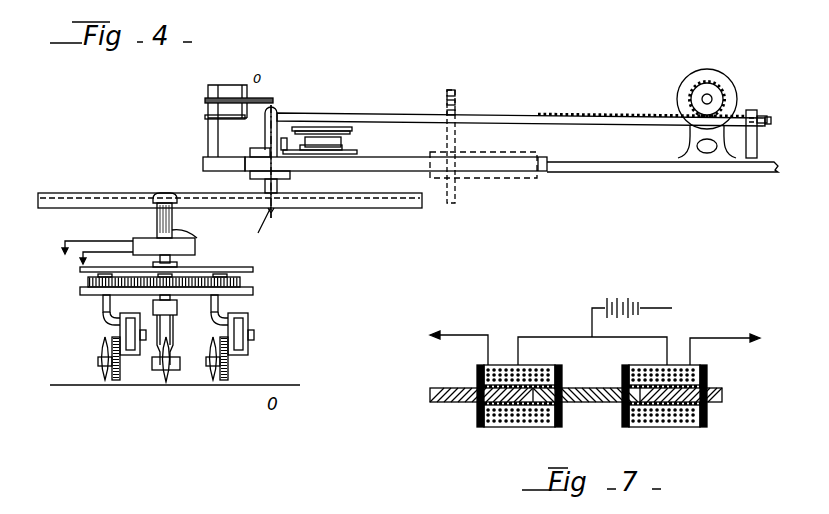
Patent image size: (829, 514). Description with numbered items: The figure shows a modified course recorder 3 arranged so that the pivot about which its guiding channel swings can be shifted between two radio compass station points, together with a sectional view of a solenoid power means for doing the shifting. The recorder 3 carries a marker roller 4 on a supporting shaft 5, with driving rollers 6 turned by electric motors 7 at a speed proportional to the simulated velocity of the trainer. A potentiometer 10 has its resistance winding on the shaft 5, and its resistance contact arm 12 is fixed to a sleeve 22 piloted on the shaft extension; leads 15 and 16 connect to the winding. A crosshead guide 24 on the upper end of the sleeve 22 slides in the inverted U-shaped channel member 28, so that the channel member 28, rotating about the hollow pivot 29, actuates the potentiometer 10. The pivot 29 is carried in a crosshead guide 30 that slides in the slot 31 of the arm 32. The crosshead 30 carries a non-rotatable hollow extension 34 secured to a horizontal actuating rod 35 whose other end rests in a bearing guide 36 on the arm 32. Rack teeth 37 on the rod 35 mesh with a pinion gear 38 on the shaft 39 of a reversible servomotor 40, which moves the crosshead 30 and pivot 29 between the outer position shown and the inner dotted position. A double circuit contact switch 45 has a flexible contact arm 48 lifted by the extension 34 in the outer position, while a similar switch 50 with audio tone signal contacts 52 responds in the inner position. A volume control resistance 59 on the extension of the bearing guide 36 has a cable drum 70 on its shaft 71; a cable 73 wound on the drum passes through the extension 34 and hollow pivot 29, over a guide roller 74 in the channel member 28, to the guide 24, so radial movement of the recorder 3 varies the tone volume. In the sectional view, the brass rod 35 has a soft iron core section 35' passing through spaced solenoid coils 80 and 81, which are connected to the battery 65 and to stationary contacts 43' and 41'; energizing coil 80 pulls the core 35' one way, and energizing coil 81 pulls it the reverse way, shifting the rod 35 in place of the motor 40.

In FIG. 4, the course recorder 3 is at (256, 289).
In FIG. 4, the marker roller 4 is at (166, 383).
In FIG. 4, the supporting shaft 5 is at (185, 333).
In FIG. 4, the driving rollers 6 is at (107, 388).
In FIG. 4, the electric motors 7 is at (253, 338).
In FIG. 4, the potentiometer 10 is at (195, 249).
In FIG. 4, the resistance contact arm 12 is at (184, 232).
In FIG. 4, the lead 15 is at (90, 222).
In FIG. 4, the lead 16 is at (104, 257).
In FIG. 4, the sleeve 22 is at (158, 221).
In FIG. 4, the crosshead guide 24 is at (177, 205).
In FIG. 4, the channel member 28 is at (323, 209).
In FIG. 4, the pivot 29 is at (282, 185).
In FIG. 4, the crosshead guide 30 is at (260, 149).
In FIG. 4, the slot 31 is at (543, 154).
In FIG. 4, the arm 32 is at (573, 168).
In FIG. 4, the hollow extension 34 is at (280, 106).
In FIG. 4, the actuating rod 35 is at (524, 108).
In FIG. 7, the actuating rod 35 is at (586, 409).
In FIG. 4, the bearing guide 36 is at (757, 141).
In FIG. 4, the rack teeth 37 is at (573, 113).
In FIG. 4, the pinion gear 38 is at (717, 83).
In FIG. 4, the shaft 39 is at (714, 100).
In FIG. 4, the reversible electric servomotor 40 is at (699, 72).
In FIG. 4, the double circuit contact switch 45 is at (230, 93).
In FIG. 4, the flexible contact arm 48 is at (262, 97).
In FIG. 4, the double circuit contact switch 50 is at (458, 94).
In FIG. 4, the audio tone signal contacts 52 is at (177, 310).
In FIG. 4, the volume control resistance 59 is at (350, 144).
In FIG. 4, the cable drum 70 is at (353, 130).
In FIG. 4, the shaft 71 is at (292, 142).
In FIG. 4, the cable 73 is at (227, 215).
In FIG. 4, the guide roller 74 is at (270, 228).
In FIG. 7, the core section 35' is at (586, 408).
In FIG. 7, the stationary contact 41' is at (739, 341).
In FIG. 7, the stationary contact 43' is at (427, 338).
In FIG. 7, the battery 65 is at (620, 296).
In FIG. 7, the solenoid coil 80 is at (521, 426).
In FIG. 7, the solenoid coil 81 is at (649, 426).